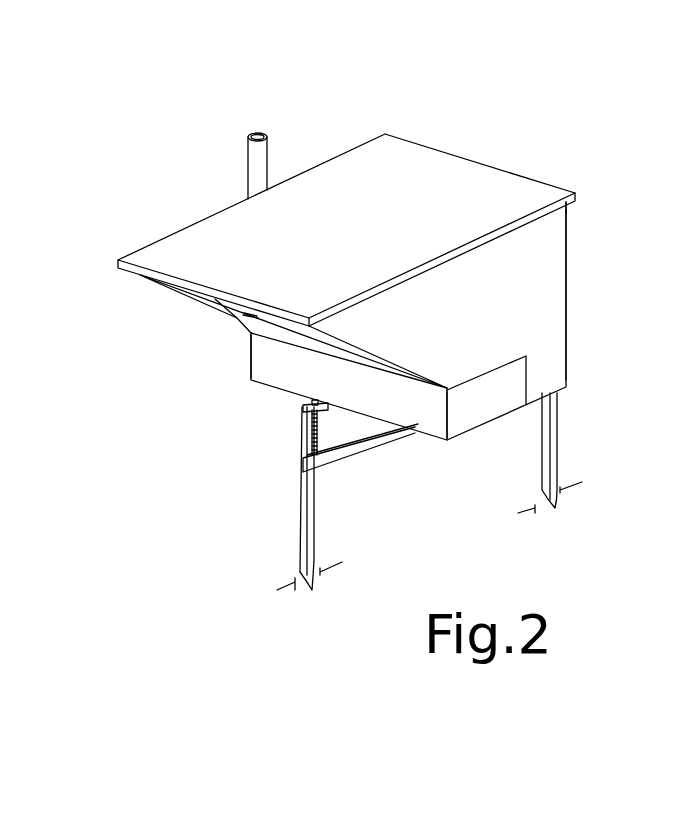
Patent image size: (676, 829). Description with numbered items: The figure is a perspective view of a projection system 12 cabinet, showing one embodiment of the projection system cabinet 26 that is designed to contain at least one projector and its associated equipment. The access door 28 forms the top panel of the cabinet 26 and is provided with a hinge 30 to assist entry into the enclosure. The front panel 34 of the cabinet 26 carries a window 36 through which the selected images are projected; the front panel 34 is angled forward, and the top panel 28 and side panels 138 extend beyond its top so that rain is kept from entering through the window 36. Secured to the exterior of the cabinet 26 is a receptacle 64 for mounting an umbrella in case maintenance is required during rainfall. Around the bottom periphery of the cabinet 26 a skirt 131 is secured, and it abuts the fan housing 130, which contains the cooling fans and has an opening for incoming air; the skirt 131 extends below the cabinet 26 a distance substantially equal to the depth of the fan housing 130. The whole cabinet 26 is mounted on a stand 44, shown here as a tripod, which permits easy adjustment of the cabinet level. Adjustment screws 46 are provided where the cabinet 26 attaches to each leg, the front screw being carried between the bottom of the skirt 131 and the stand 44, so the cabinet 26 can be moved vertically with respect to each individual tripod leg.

The projection system 12 is at (428, 203).
The projection system cabinet 26 is at (408, 330).
The access door 28 is at (375, 180).
The hinge 30 is at (523, 225).
The front panel 34 is at (220, 312).
The window 36 is at (243, 320).
The stand 44 is at (303, 525).
The adjustment screws 46 is at (302, 457).
The receptacle 64 is at (264, 137).
The fan housing 130 is at (540, 378).
The skirt 131 is at (501, 392).
The side panels 138 is at (513, 291).